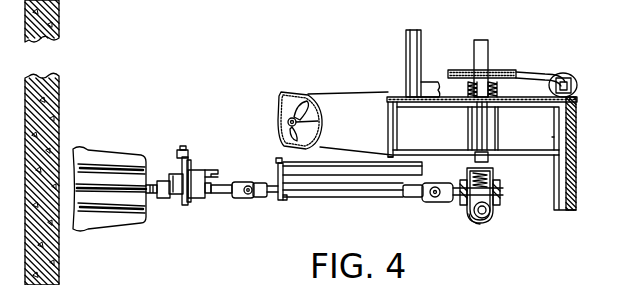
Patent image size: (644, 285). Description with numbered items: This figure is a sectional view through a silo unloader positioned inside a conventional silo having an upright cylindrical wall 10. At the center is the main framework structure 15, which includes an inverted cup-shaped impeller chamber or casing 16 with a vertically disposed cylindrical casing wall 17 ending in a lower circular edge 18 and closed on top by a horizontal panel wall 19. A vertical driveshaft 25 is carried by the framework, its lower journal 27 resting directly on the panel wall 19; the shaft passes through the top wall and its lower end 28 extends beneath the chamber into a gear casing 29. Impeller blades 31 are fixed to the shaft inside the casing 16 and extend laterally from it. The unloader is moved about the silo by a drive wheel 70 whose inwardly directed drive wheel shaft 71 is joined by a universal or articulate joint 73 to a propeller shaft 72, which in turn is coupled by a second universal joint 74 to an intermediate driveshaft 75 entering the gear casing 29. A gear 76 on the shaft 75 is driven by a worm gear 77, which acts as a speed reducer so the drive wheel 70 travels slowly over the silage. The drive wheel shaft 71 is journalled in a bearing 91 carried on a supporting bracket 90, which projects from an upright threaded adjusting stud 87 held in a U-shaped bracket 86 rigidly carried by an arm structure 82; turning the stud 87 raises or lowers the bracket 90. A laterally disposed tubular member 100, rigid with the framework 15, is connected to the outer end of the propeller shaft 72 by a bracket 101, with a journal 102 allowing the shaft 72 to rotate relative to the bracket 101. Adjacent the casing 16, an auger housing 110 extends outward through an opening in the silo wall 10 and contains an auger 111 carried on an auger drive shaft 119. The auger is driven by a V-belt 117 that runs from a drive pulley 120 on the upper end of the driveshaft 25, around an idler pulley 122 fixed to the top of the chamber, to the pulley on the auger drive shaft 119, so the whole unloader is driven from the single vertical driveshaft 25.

The upright cylindrical wall 10 is at (57, 137).
The main framework structure 15 is at (402, 33).
The impeller chamber or casing 16 is at (392, 90).
The cylindrical casing wall 17 is at (578, 118).
The lower circular edge 18 is at (393, 157).
The panel wall 19 is at (442, 82).
The driveshaft 25 is at (487, 58).
The lower journal 27 is at (498, 93).
The lower end 28 is at (488, 160).
The gear casing 29 is at (490, 218).
The impeller blades 31 is at (552, 137).
The drive wheel 70 is at (114, 163).
The drive wheel shaft 71 is at (222, 183).
The propeller shaft 72 is at (348, 196).
The universal or articulate joint 73 is at (237, 200).
The universal or articulate joint 74 is at (435, 202).
The intermediate driveshaft 75 is at (500, 184).
The gear 76 is at (470, 173).
The worm gear 77 is at (491, 210).
The arm structure 82 is at (200, 168).
The U-shaped bracket 86 is at (189, 160).
The threaded adjusting stud 87 is at (181, 150).
The supporting bracket 90 is at (170, 177).
The journal or bearing 91 is at (163, 198).
The tubular member 100 is at (333, 175).
The bracket 101 is at (277, 163).
The journal 102 is at (282, 200).
The auger housing 110 is at (340, 96).
The auger 111 is at (297, 108).
The V-belt 117 is at (537, 72).
The auger drive shaft 119 is at (280, 113).
The drive pulley 120 is at (463, 69).
The idler pulley 122 is at (576, 83).